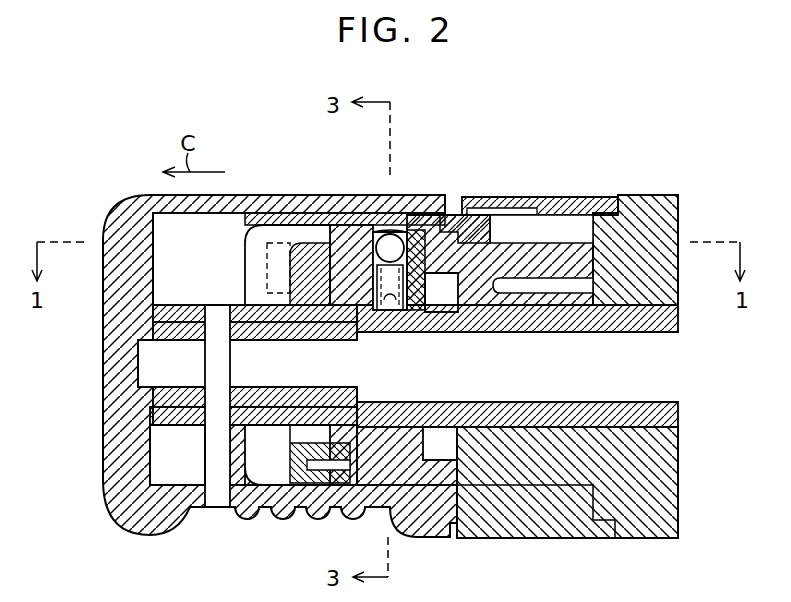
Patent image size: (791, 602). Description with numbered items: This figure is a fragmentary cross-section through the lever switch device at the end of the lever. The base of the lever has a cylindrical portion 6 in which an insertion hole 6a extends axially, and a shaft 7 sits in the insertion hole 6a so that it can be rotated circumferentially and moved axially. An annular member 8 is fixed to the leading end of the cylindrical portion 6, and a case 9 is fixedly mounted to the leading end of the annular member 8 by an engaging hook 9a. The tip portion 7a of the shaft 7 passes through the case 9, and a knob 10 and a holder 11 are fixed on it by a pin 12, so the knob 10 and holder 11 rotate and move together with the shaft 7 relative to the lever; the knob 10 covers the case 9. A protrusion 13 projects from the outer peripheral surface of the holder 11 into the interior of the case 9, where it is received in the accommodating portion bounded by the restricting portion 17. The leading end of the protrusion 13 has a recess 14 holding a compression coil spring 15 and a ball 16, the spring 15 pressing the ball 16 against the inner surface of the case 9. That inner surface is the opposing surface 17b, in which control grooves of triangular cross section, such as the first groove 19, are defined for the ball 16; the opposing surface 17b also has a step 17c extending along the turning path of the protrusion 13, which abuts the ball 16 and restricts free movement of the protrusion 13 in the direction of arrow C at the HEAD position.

The cylindrical portion 6 is at (642, 217).
The insertion hole 6a is at (680, 334).
The shaft 7 is at (676, 400).
The tip portion 7a is at (112, 360).
The annular member 8 is at (518, 538).
The case 9 is at (315, 212).
The engaging hook 9a is at (507, 200).
The knob 10 is at (100, 402).
The holder 11 is at (150, 442).
The pin 12 is at (216, 495).
The protrusion 13 is at (362, 213).
The recess 14 is at (398, 326).
The compression coil spring 15 is at (382, 326).
The ball 16 is at (401, 232).
The restricting portion 17 is at (292, 210).
The opposing surface 17b is at (337, 212).
The step 17c is at (394, 230).
The first groove 19 is at (433, 213).